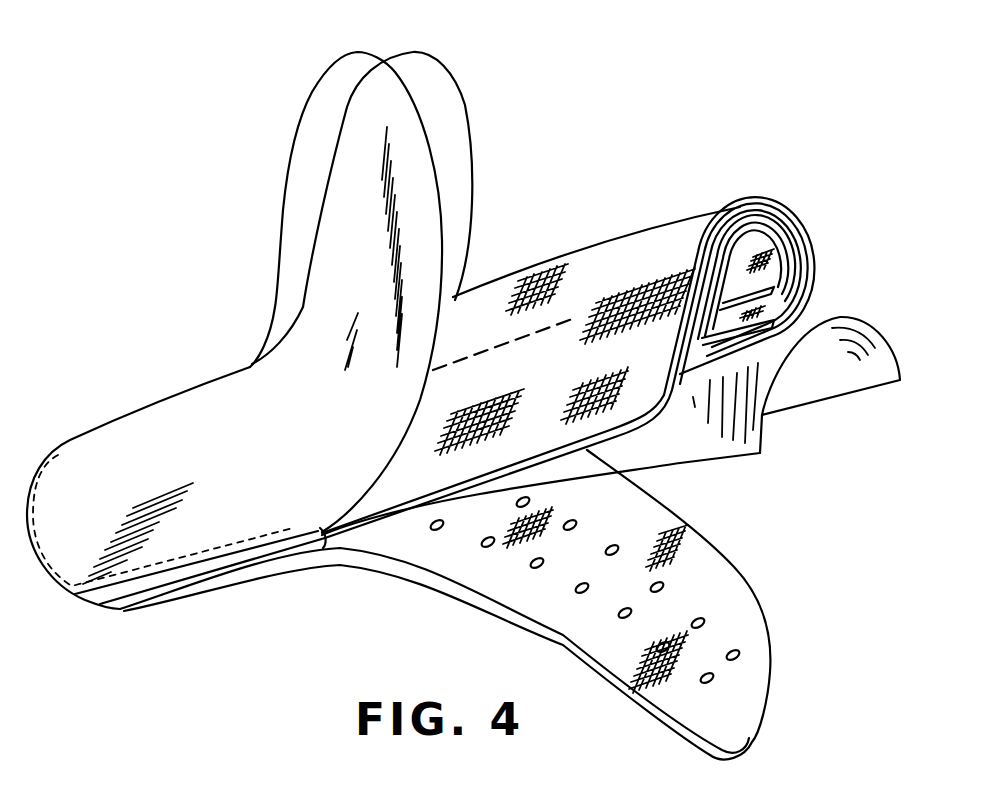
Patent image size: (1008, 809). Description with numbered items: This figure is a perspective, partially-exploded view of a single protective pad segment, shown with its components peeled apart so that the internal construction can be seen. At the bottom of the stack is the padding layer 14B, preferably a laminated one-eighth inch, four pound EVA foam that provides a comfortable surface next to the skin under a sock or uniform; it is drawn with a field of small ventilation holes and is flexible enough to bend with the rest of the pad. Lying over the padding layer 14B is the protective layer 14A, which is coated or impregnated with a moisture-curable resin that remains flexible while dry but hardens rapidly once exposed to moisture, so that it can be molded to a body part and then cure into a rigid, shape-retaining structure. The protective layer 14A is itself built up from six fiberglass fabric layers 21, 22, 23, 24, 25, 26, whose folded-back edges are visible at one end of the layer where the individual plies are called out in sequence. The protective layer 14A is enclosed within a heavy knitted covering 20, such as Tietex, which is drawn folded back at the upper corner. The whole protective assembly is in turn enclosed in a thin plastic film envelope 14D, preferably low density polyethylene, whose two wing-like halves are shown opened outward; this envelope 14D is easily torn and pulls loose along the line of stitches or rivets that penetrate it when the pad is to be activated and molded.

The protective layer 14A is at (640, 240).
The padding layer 14B is at (737, 687).
The envelope 14D is at (315, 132).
The knitted covering 20 is at (452, 83).
The fiberglass fabric layer 21 is at (766, 199).
The fiberglass fabric layer 22 is at (778, 210).
The fiberglass fabric layer 23 is at (787, 226).
The fiberglass fabric layer 24 is at (792, 250).
The fiberglass fabric layer 25 is at (788, 262).
The fiberglass fabric layer 26 is at (779, 284).